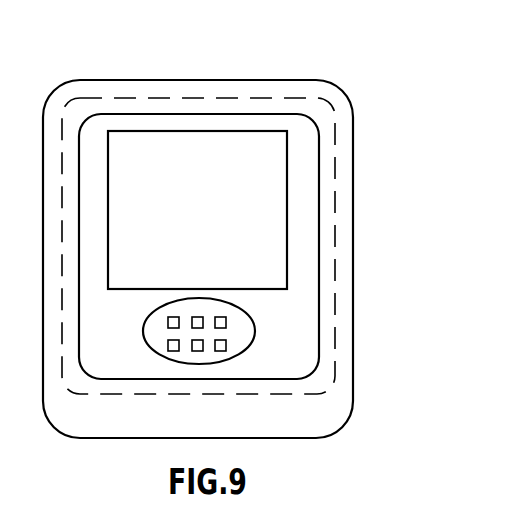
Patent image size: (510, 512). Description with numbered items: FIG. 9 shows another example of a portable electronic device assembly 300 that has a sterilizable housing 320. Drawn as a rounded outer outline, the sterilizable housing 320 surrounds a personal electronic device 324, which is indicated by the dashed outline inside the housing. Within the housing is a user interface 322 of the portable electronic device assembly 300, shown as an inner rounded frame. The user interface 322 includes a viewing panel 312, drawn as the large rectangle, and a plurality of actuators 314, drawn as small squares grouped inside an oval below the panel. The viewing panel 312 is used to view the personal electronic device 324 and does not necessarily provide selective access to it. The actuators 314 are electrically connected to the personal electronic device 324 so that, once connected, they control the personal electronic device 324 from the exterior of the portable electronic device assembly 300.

The portable electronic device assembly 300 is at (215, 59).
The viewing panel 312 is at (221, 203).
The actuators 314 is at (204, 328).
The sterilizable housing 320 is at (348, 93).
The user interface 322 is at (98, 130).
The personal electronic device 324 is at (336, 232).